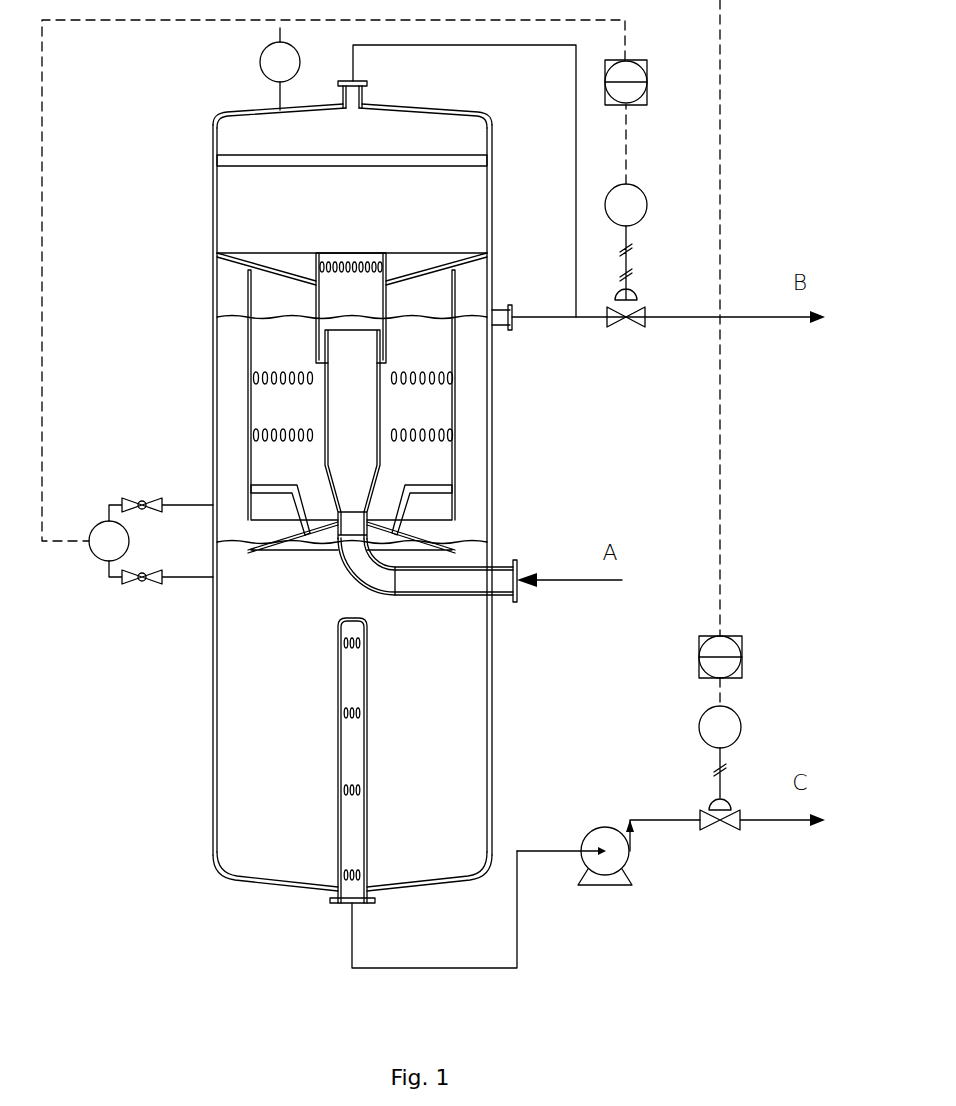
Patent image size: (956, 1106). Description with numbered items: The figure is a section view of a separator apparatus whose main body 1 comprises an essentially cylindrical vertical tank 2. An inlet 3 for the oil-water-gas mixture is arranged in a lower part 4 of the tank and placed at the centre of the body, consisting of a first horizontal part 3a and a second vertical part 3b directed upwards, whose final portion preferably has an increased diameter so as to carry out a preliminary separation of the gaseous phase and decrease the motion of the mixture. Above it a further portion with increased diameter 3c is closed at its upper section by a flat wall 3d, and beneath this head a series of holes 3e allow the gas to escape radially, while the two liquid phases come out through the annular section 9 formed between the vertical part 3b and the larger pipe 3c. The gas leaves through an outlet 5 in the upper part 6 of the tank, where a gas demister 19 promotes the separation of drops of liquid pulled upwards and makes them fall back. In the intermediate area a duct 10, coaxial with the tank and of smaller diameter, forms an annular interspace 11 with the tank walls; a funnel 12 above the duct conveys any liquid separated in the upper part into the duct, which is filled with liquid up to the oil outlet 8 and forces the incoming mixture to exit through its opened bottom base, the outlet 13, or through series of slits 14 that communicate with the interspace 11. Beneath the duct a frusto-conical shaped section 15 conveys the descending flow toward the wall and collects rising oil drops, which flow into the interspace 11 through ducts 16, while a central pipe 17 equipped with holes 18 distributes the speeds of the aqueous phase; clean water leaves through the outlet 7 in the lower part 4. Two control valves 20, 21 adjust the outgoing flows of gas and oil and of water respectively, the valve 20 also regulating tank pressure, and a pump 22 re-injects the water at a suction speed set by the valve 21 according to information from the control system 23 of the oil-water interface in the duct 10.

The main body 1 is at (156, 819).
The vertical tank 2 is at (215, 276).
The inlet 3 is at (457, 416).
The first horizontal part 3a is at (453, 582).
The second vertical part 3b is at (353, 418).
The portion of the vertical part with increased diameter 3c is at (390, 266).
The flat wall 3d is at (352, 297).
The holes 3e is at (335, 258).
The lower part 4 is at (258, 698).
The outlet for gas emission 5 is at (367, 84).
The upper part 6 is at (397, 200).
The outlet for clean water 7 is at (330, 902).
The outlet for oil 8 is at (505, 306).
The annular section 9 is at (325, 340).
The duct 10 is at (278, 412).
The annular interspace 11 is at (232, 450).
The funnel 12 is at (290, 265).
The outlet of the duct 13 is at (432, 520).
The slits 14 is at (423, 378).
The frusto-conical shaped section 15 is at (293, 545).
The ducts 16 is at (250, 485).
The pipe 17 is at (449, 760).
The holes 18 is at (362, 785).
The gas demister 19 is at (243, 160).
The control valve 20 is at (641, 306).
The control valve 21 is at (700, 805).
The pump 22 is at (625, 878).
The control system 23 is at (108, 540).